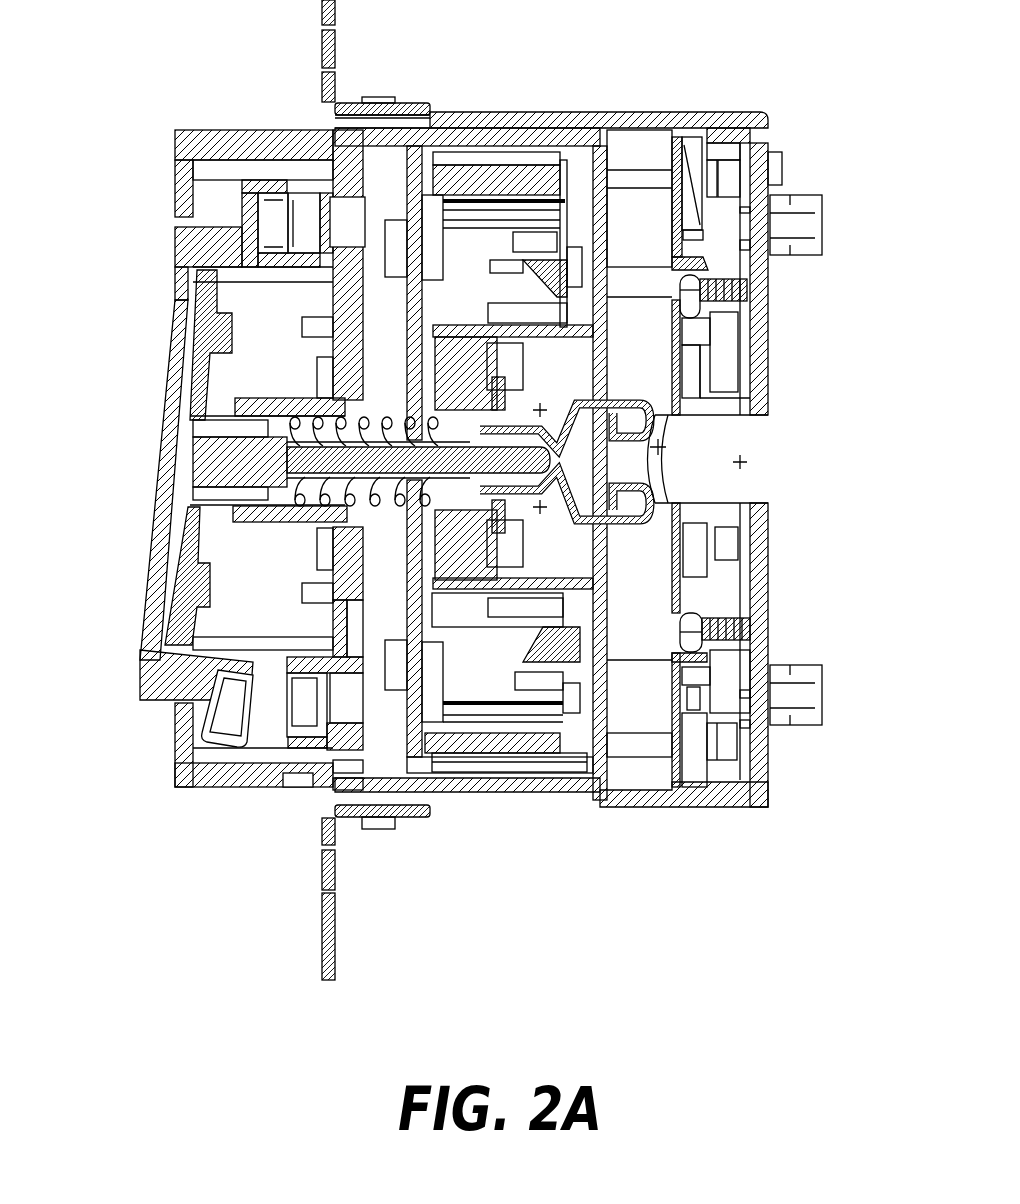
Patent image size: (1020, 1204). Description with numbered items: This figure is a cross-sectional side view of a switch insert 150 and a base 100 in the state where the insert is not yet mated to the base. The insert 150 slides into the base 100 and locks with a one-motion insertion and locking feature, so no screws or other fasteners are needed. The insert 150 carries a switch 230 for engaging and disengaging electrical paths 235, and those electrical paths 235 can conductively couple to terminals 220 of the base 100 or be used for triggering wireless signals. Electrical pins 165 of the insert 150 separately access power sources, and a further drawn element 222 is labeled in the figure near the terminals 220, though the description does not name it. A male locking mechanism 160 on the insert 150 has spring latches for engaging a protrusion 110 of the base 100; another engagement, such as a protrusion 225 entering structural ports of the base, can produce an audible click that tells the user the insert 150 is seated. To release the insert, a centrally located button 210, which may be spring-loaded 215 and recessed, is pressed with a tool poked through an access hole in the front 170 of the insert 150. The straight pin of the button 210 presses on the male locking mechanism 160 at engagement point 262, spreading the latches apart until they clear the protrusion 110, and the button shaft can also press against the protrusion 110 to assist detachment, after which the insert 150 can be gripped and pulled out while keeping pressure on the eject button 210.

The base 100 is at (662, 125).
The protrusion 110 is at (745, 482).
The insert 150 is at (470, 148).
The male locking mechanism 160 is at (622, 410).
The electrical pins 165 is at (628, 180).
The front 170 is at (183, 143).
The button 210 is at (247, 462).
The spring-loaded 215 is at (337, 488).
The terminals 220 is at (670, 235).
The screw 222 is at (747, 286).
The protrusion 225 is at (645, 640).
The switch 230 is at (140, 667).
The electrical paths 235 is at (307, 230).
The engagement point 262 is at (660, 455).